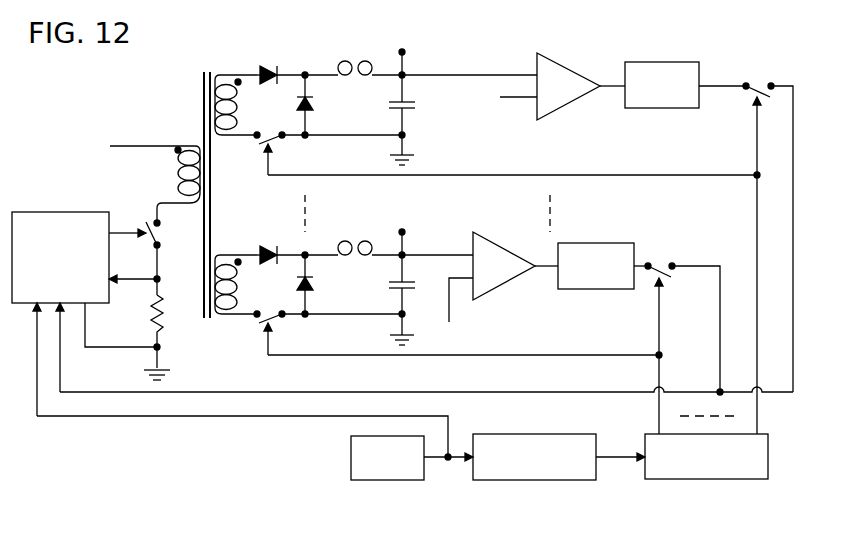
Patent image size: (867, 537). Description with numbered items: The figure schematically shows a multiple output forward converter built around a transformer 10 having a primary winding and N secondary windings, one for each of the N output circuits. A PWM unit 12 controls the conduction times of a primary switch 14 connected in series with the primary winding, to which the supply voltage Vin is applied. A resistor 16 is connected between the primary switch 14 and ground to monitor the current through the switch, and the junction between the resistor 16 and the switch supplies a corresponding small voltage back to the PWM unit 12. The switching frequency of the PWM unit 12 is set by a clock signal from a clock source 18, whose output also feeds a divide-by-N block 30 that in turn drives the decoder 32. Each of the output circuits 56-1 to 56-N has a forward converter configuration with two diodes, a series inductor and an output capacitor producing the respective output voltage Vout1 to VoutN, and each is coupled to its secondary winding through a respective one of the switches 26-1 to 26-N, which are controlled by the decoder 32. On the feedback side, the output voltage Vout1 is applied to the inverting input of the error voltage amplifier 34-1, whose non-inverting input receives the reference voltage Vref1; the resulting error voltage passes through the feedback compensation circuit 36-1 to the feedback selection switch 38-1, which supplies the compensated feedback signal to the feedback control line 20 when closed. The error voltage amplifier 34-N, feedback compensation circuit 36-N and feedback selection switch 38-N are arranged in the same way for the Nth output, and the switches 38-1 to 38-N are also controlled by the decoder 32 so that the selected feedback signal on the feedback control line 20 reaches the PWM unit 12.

The transformer 10 is at (192, 137).
The PWM unit 12 is at (60, 212).
The primary switch 14 is at (148, 218).
The resistor 16 is at (167, 330).
The clock source 18 is at (351, 462).
The feedback control line 20 is at (249, 392).
The switch 26-1 is at (290, 147).
The switch 26-N is at (287, 325).
The divide by N counter 30 is at (540, 435).
The decoder 32 is at (646, 435).
The error voltage amplifier 34-1 is at (580, 44).
The error voltage amplifier 34-N is at (496, 245).
The feedback compensation circuit 36-1 is at (655, 62).
The feedback compensation circuit 36-N is at (594, 243).
The feedback selection switch 38-1 is at (760, 72).
The feedback selection switch 38-N is at (660, 262).
The output circuit 56-1 is at (373, 120).
The output circuit 56-N is at (375, 298).